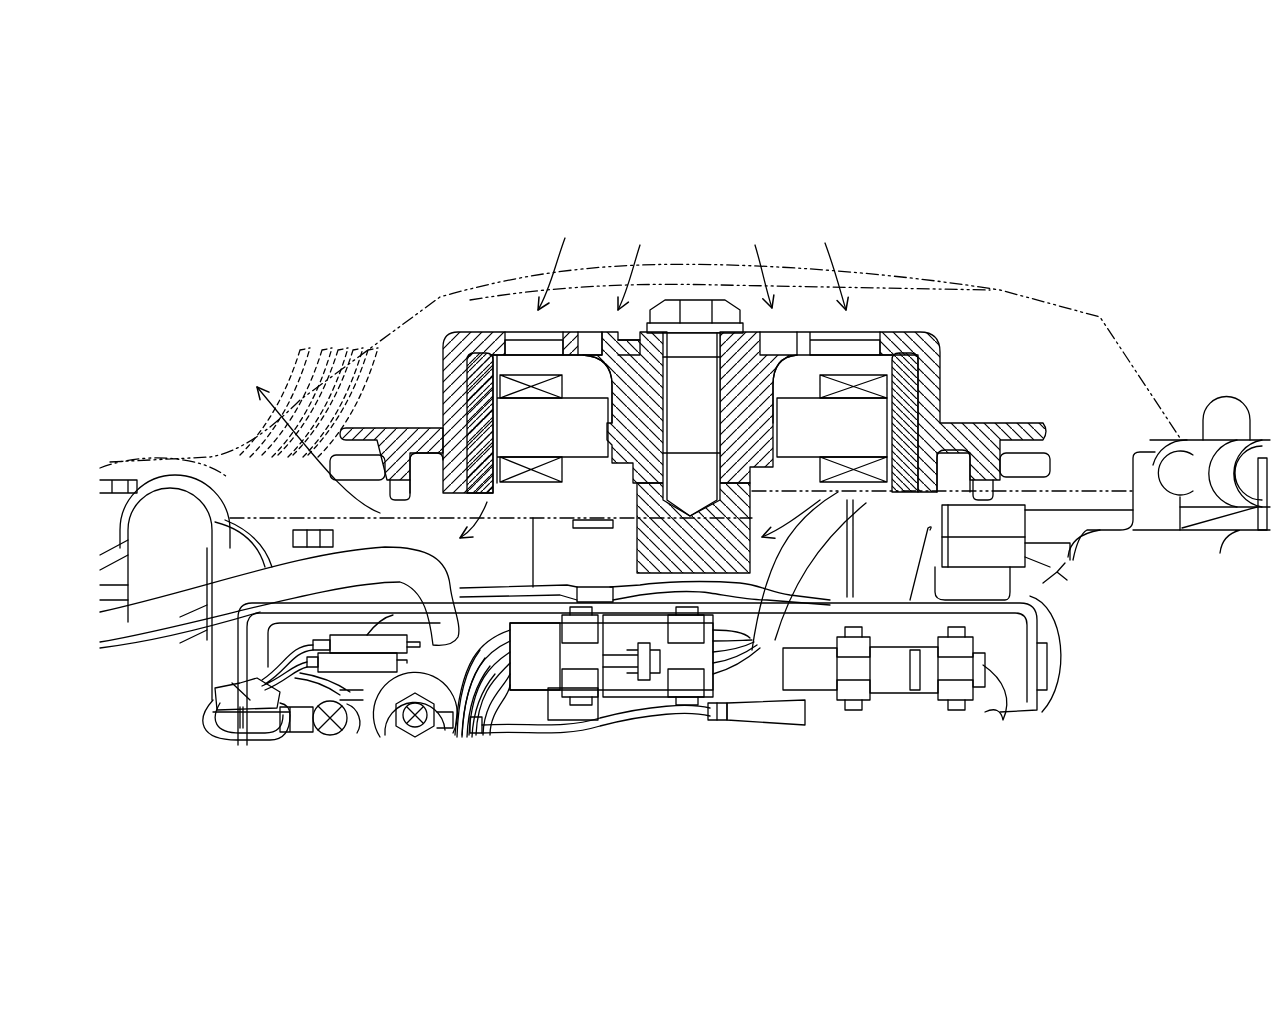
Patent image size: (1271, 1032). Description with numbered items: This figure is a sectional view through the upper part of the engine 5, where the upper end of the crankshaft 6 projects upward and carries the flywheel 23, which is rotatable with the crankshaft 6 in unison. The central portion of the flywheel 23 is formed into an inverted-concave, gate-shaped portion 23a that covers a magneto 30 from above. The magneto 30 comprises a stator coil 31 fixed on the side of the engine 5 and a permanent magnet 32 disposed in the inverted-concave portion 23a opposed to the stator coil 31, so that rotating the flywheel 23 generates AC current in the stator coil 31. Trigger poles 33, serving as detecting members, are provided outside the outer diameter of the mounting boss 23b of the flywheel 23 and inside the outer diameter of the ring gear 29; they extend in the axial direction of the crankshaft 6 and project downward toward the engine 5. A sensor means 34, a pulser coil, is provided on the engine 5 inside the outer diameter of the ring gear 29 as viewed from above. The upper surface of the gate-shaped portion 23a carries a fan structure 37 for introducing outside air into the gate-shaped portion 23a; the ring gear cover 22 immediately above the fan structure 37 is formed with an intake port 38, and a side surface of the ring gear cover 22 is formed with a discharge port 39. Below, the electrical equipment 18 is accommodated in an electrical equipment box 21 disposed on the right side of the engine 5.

The engine 5 is at (813, 168).
The crankshaft 6 is at (637, 530).
The electrical equipment 18 is at (365, 748).
The electrical equipment box 21 is at (1030, 693).
The ring gear cover 22 is at (1013, 300).
The flywheel 23 is at (980, 421).
The inverted-concave portion 23a is at (960, 340).
The mounting boss 23b is at (627, 390).
The ring gear 29 is at (1053, 460).
The magneto 30 is at (478, 172).
The stator coil 31 is at (503, 483).
The permanent magnet 32 is at (473, 383).
The trigger poles 33 is at (400, 495).
The sensor means 34 is at (980, 553).
The fan structure 37 is at (817, 447).
The intake port 38 is at (690, 290).
The discharge port 39 is at (302, 385).